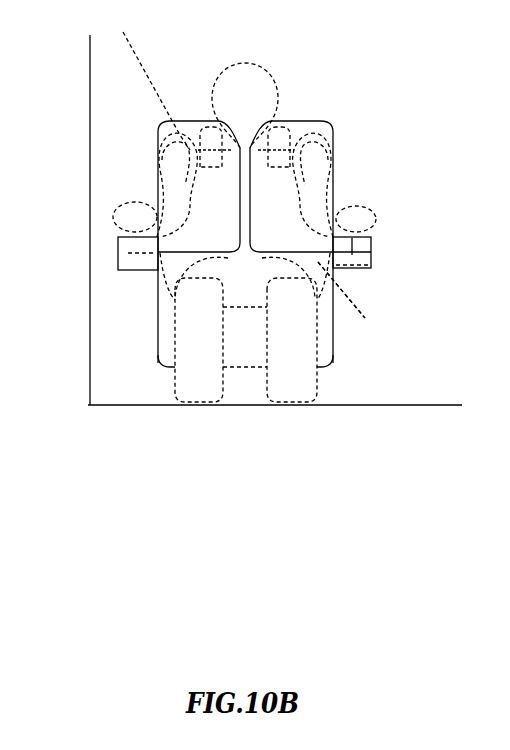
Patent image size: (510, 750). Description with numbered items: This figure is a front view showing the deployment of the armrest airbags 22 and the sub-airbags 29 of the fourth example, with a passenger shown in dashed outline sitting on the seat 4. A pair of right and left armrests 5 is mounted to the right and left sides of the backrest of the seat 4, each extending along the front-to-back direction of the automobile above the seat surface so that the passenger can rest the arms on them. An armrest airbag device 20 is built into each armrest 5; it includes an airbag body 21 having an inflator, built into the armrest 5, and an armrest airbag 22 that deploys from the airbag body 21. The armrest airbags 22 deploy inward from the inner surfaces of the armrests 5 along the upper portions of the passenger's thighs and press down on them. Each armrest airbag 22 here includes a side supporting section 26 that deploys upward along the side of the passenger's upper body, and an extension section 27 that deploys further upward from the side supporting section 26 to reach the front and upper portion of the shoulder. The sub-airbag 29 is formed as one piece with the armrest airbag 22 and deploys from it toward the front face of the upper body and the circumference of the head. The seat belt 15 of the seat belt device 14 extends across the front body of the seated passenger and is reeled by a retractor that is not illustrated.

The seat 4 is at (332, 350).
The armrest 5 is at (118, 262).
The seat belt device 14 is at (341, 290).
The seat belt 15 is at (123, 32).
The armrest airbag device 20 is at (103, 196).
The airbag body 21 is at (118, 232).
The armrest airbag 22 is at (56, 80).
The side supporting section 26 is at (158, 212).
The extension section 27 is at (163, 168).
The sub-airbag 29 is at (195, 155).